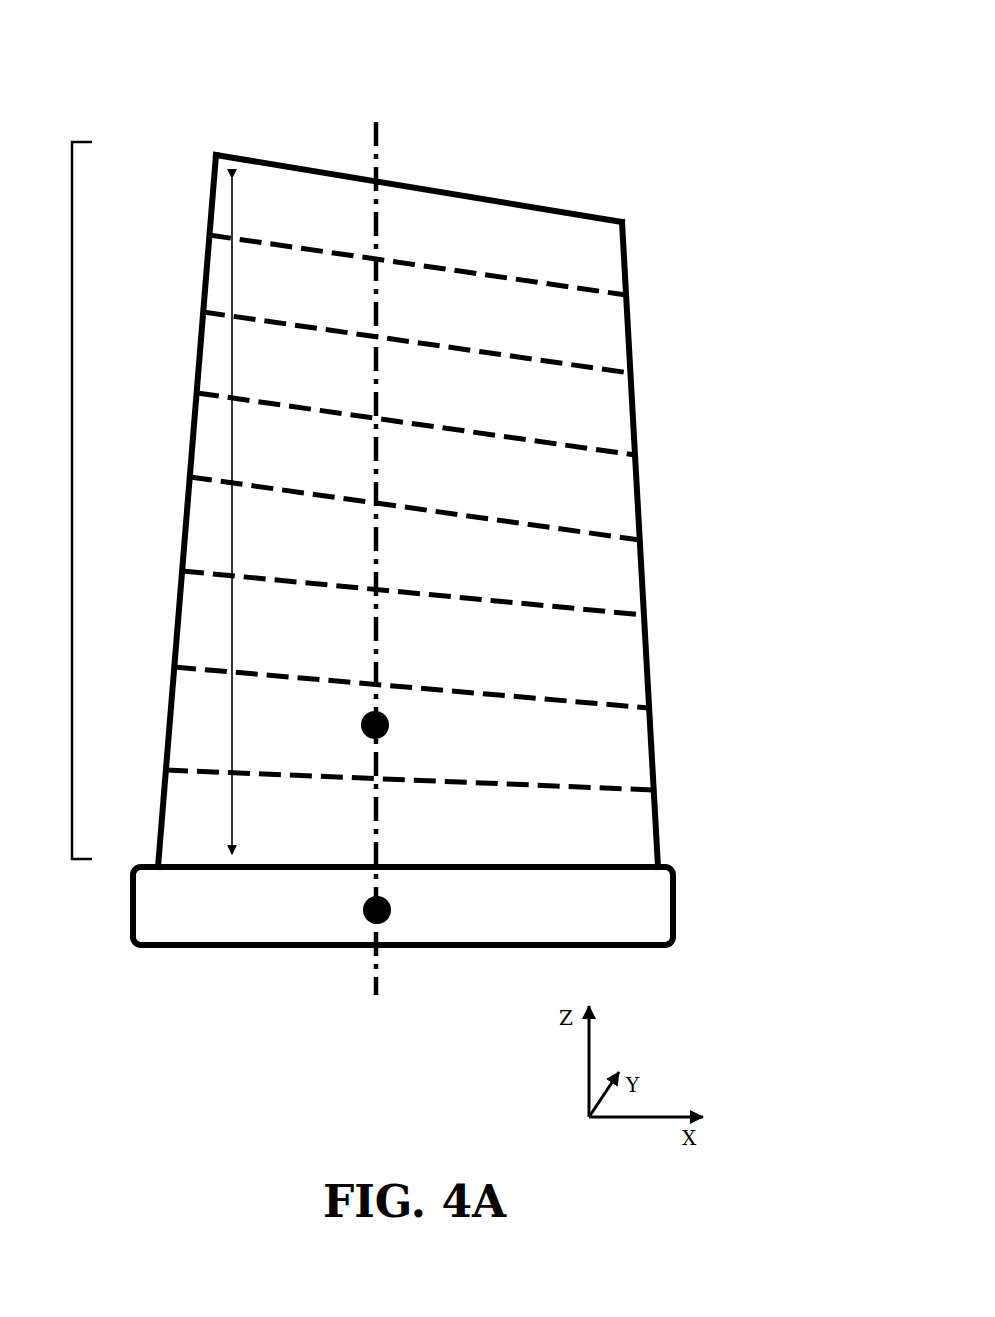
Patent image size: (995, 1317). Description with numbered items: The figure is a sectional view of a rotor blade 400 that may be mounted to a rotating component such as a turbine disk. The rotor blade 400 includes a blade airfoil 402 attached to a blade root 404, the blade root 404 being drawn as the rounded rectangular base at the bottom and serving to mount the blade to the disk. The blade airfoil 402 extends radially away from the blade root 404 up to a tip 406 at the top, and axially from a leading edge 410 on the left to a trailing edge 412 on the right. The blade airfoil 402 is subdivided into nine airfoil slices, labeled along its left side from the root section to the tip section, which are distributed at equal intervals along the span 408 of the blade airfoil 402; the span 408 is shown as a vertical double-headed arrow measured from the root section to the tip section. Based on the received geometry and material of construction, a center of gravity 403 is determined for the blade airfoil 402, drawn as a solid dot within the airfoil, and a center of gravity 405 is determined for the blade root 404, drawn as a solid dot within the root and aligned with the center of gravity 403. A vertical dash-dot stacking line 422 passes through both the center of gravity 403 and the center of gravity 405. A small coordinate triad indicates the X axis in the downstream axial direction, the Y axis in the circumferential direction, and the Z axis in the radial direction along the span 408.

The rotor blade 400 is at (96, 33).
The blade airfoil 402 is at (72, 387).
The center of gravity of blade airfoil 403 is at (361, 725).
The blade root 404 is at (673, 910).
The center of gravity of blade root 405 is at (363, 915).
The tip 406 is at (492, 196).
The span 408 is at (235, 207).
The leading edge 410 is at (190, 438).
The trailing edge 412 is at (638, 507).
The stacking line 422 is at (377, 166).